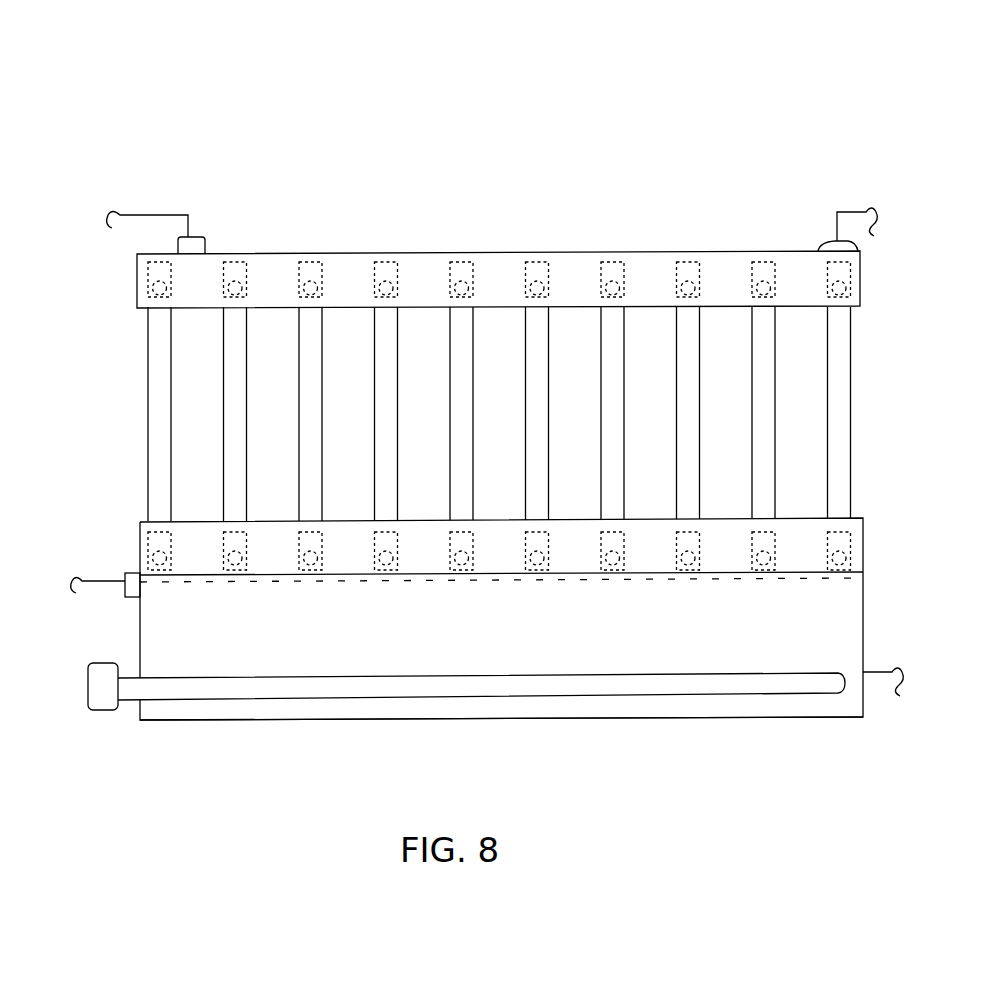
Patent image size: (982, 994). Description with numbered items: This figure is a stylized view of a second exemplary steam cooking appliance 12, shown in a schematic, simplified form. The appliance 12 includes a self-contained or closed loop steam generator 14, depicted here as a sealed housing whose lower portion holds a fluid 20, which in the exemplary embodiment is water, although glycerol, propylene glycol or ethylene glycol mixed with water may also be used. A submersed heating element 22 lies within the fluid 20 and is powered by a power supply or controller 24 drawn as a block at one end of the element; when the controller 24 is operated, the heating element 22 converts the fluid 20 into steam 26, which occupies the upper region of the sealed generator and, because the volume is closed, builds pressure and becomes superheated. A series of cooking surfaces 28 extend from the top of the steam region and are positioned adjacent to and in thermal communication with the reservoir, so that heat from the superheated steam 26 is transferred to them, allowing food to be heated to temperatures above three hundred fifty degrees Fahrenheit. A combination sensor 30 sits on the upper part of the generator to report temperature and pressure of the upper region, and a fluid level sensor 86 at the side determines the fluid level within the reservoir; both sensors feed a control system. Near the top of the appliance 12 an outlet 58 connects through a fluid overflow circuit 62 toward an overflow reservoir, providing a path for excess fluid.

The steam cooking appliance 12 is at (150, 112).
The self-contained or closed loop steam generator 14 is at (345, 722).
The fluid 20 is at (209, 712).
The submersed heating element 22 is at (487, 695).
The power supply or controller 24 is at (90, 700).
The steam 26 is at (352, 268).
The cooking surfaces 28 is at (678, 420).
The combination sensor 30 is at (196, 238).
The outlet 58 is at (818, 242).
The fluid overflow circuit 62 is at (837, 212).
The fluid level sensor 86 is at (125, 597).